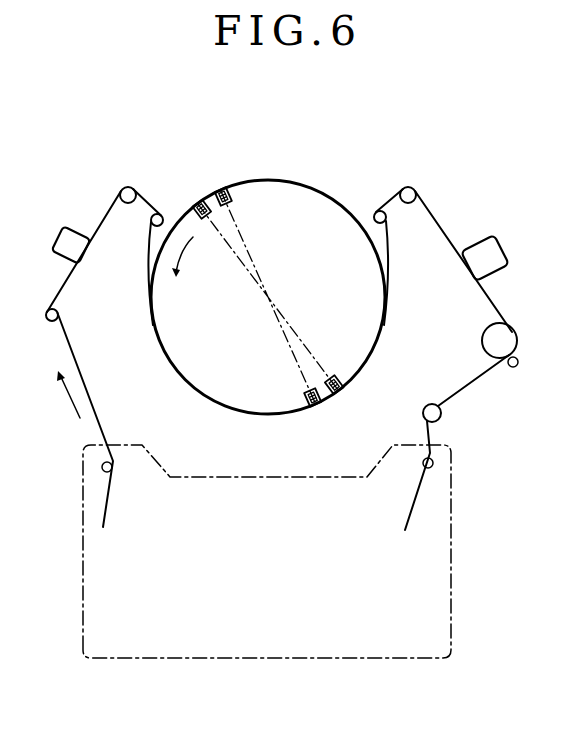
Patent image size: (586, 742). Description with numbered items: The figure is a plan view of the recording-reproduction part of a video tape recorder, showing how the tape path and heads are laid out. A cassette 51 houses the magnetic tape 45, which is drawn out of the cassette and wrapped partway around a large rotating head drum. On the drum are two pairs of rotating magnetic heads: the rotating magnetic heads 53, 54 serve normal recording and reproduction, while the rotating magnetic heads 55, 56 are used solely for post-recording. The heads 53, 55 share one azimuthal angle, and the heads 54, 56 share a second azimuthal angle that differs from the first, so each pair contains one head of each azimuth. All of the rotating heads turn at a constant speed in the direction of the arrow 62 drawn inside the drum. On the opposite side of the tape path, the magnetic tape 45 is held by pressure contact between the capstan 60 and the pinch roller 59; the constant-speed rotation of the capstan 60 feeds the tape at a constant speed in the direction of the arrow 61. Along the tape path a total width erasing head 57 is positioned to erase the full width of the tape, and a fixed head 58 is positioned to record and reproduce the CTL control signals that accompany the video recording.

The arrow 62 is at (187, 240).
The rotating magnetic head 53 is at (198, 202).
The rotating magnetic head 55 is at (250, 157).
The rotating magnetic head 54 is at (373, 380).
The rotating magnetic head 56 is at (303, 427).
The arrow 61 is at (57, 417).
The magnetic tape 45 is at (486, 410).
The total width erasing head 57 is at (66, 232).
The fixed head 58 is at (518, 216).
The pinch roller 59 is at (513, 331).
The capstan 60 is at (538, 371).
The cassette 51 is at (477, 589).